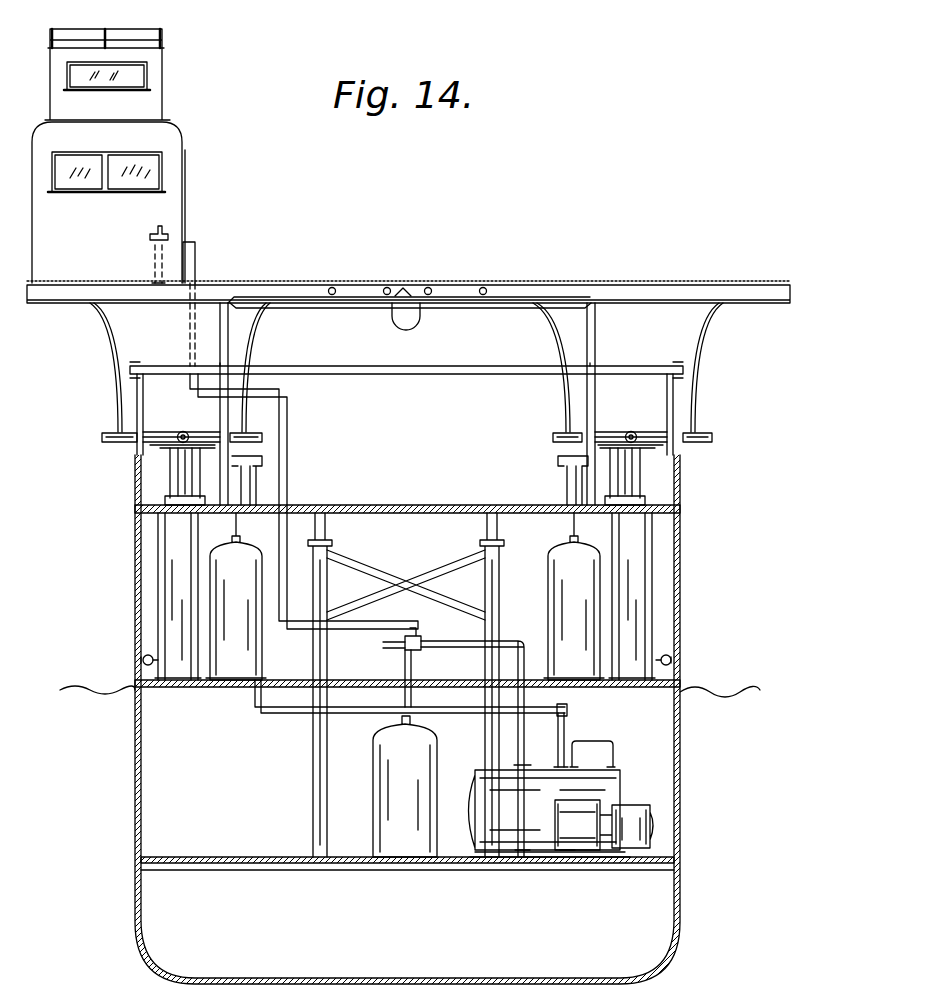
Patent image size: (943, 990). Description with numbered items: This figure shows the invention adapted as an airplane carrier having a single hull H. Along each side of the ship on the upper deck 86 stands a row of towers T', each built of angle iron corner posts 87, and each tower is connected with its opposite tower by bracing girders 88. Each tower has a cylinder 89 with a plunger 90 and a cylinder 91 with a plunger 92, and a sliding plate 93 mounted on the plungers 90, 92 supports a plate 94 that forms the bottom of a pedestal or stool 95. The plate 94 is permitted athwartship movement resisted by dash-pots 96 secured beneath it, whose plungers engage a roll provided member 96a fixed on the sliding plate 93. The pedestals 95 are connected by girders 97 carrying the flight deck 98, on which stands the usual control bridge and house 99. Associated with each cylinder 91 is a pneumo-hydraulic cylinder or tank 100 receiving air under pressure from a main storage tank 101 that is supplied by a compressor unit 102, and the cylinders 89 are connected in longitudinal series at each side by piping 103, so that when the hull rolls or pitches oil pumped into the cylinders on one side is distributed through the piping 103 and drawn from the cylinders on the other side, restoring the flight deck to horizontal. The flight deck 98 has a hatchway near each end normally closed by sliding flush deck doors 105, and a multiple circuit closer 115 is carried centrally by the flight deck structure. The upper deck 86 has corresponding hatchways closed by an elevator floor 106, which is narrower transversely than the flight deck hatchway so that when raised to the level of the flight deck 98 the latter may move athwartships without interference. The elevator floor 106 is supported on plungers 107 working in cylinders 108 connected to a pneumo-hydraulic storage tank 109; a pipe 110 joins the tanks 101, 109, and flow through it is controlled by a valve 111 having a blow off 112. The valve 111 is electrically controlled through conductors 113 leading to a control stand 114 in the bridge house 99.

The control bridge and house 99 is at (170, 206).
The control stand 114 is at (172, 236).
The conductors 113 is at (196, 263).
The flight deck 98 is at (592, 288).
The girders 97 is at (638, 293).
The flush deck doors 105 is at (440, 284).
The multiple circuit closer 115 is at (418, 318).
The bracing girders 88 is at (470, 350).
The pedestal or stool 95 is at (248, 350).
The angle iron corner posts 87 is at (143, 395).
The dash-pots 96 is at (106, 434).
The plate 94 is at (200, 430).
The roll provided member 96a is at (181, 432).
The sliding plate 93 is at (215, 449).
The towers T' is at (406, 457).
The plunger 90 is at (170, 478).
The plunger 92 is at (180, 486).
The upper deck 86 is at (548, 494).
The hull H is at (682, 829).
The elevator floor 106 is at (448, 493).
The cylinders 108 is at (314, 769).
The plungers 107 is at (484, 528).
The pneumo-hydraulic cylinder or tank 100 is at (262, 655).
The cylinder 89 is at (163, 569).
The cylinder 91 is at (178, 590).
The piping 103 is at (142, 661).
The valve 111 is at (421, 641).
The blow off 112 is at (392, 648).
The pipe 110 is at (474, 646).
The pneumo-hydraulic storage tank 109 is at (382, 776).
The main storage tank 101 is at (620, 776).
The compressor unit 102 is at (612, 822).